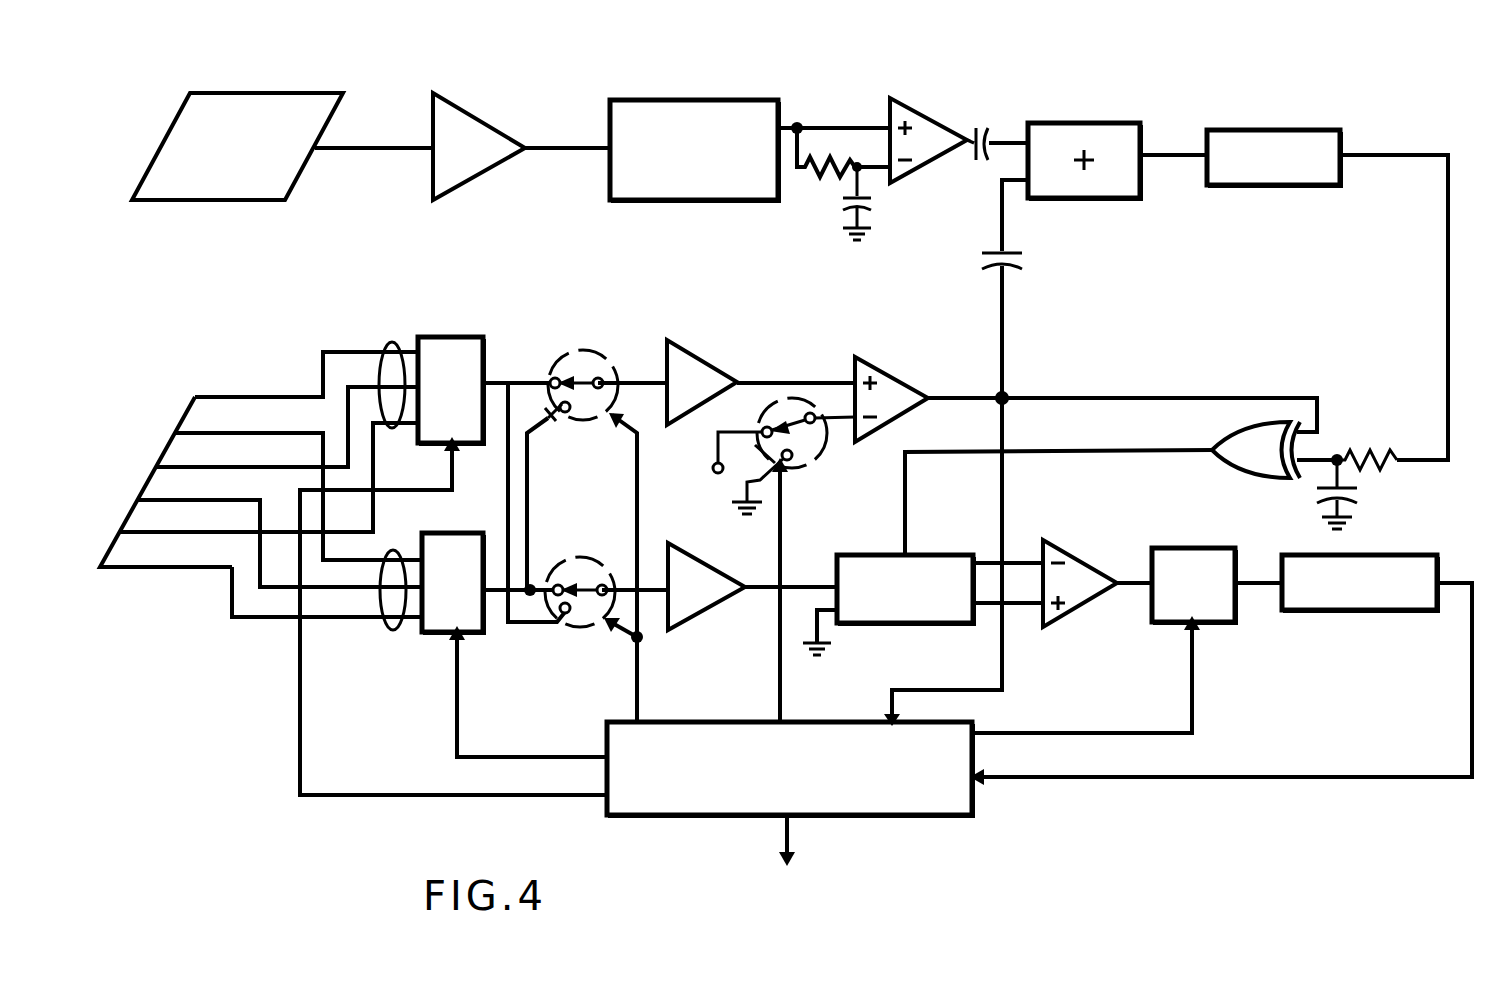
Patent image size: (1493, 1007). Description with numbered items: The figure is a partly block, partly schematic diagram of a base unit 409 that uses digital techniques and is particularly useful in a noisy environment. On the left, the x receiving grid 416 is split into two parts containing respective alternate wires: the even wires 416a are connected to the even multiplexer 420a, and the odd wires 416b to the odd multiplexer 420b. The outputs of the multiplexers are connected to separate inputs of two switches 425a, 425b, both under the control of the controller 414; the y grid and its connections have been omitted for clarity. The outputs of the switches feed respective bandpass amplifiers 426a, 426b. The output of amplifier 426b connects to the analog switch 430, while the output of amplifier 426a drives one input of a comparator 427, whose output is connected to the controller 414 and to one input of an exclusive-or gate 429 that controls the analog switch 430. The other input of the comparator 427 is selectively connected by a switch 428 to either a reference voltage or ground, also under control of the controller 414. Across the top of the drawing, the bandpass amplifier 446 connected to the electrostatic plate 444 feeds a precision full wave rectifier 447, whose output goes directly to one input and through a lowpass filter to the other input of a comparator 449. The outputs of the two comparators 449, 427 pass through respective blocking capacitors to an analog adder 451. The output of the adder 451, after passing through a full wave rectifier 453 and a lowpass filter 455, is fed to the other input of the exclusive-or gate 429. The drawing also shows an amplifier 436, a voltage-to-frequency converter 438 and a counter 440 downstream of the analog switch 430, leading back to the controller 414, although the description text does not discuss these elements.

The electrostatic plate 444 is at (278, 93).
The bandpass amplifier 446 is at (480, 118).
The precision full wave rectifier 447 is at (712, 100).
The base unit 409 is at (803, 83).
The comparator 449 is at (925, 115).
The analog adder 451 is at (1072, 122).
The full wave rectifier 453 is at (1265, 130).
The lowpass filter 455 is at (1375, 455).
The x receiving grid 416 is at (145, 470).
The even wires 416a is at (390, 340).
The odd wires 416b is at (390, 630).
The even multiplexer 420a is at (448, 337).
The odd multiplexer 420b is at (435, 635).
The switch 425a is at (592, 345).
The switch 425b is at (568, 620).
The bandpass amplifier 426a is at (728, 322).
The bandpass amplifier 426b is at (698, 613).
The comparator 427 is at (890, 362).
The switch 428 is at (823, 452).
The exclusive-or gate 429 is at (1210, 437).
The analog switch 430 is at (893, 623).
The amplifier 436 is at (1060, 545).
The voltage to frequency converter 438 is at (1217, 625).
The counter 440 is at (1357, 612).
The controller 414 is at (868, 816).